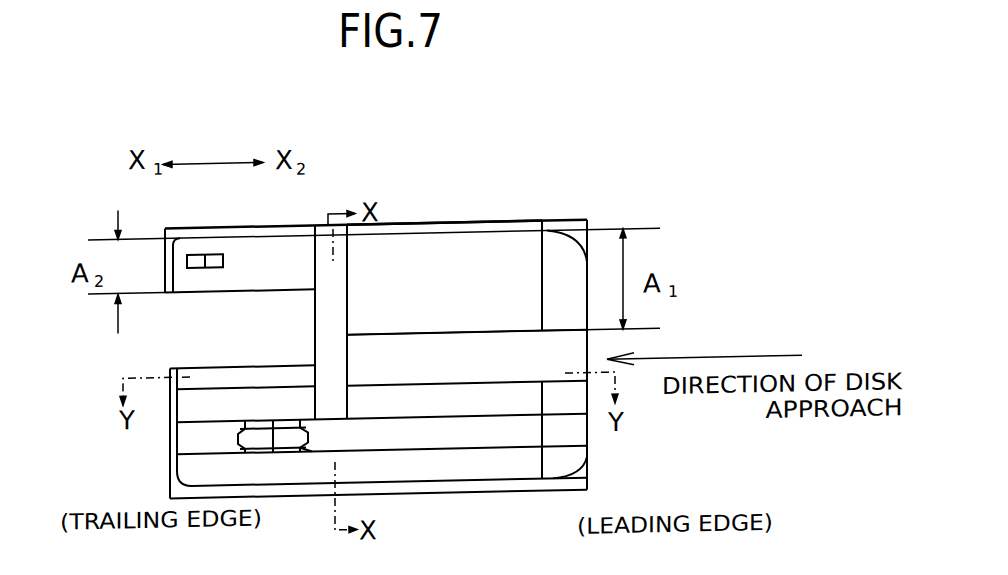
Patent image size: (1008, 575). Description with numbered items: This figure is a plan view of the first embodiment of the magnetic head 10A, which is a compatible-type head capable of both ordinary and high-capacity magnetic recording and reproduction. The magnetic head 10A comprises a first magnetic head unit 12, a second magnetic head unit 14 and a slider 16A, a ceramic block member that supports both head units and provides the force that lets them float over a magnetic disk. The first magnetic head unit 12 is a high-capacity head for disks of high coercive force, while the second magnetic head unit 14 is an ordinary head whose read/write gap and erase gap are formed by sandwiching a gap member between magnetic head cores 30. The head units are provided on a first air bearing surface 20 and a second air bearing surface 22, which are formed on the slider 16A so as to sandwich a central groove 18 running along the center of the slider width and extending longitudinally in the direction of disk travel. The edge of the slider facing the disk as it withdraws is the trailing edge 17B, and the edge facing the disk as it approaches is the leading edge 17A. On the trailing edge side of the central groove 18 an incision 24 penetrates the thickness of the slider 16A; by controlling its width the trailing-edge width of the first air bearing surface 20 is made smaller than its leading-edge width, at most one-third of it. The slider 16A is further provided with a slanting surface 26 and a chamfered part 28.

The magnetic head 10A is at (487, 140).
The first magnetic head unit 12 is at (203, 246).
The second magnetic head unit 14 is at (283, 452).
The slider 16A is at (492, 224).
The leading edge 17A is at (588, 264).
The trailing edge 17B is at (160, 265).
The central groove 18 is at (398, 342).
The first air bearing surface 20 is at (395, 245).
The second air bearing surface 22 is at (413, 459).
The incision 24 is at (200, 316).
The slanting surface 26 is at (547, 235).
The chamfered part 28 is at (317, 225).
The magnetic head cores 30 is at (520, 430).